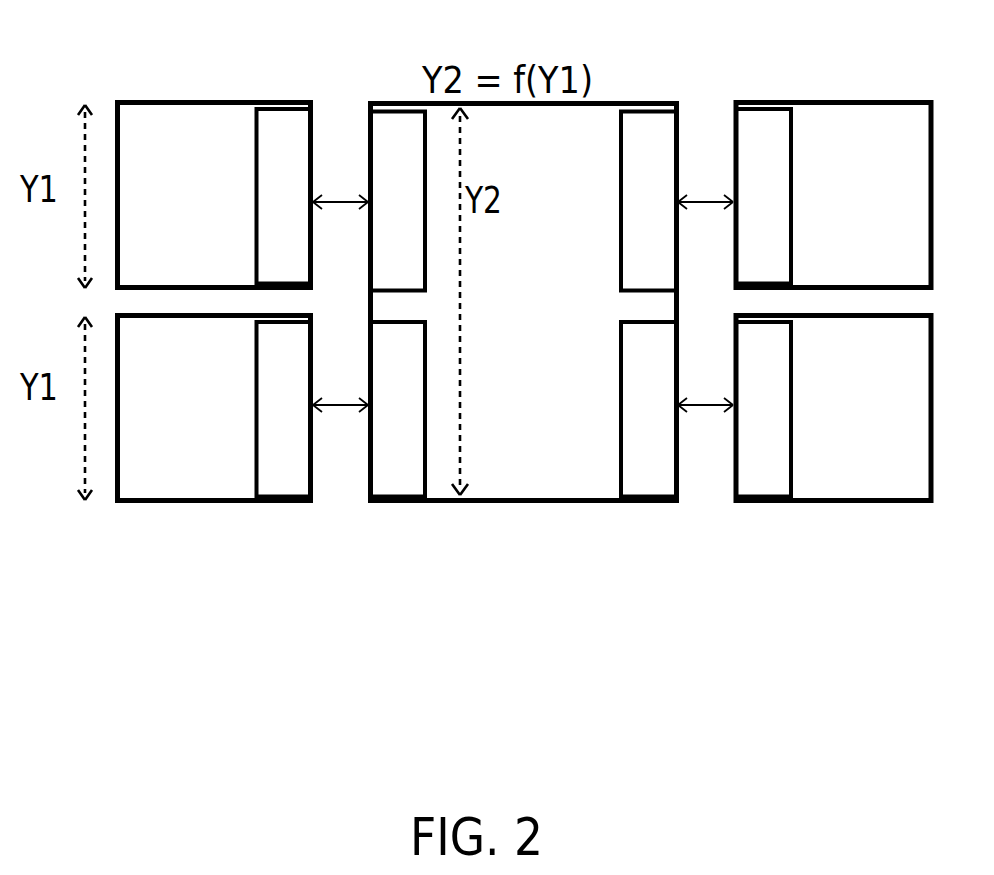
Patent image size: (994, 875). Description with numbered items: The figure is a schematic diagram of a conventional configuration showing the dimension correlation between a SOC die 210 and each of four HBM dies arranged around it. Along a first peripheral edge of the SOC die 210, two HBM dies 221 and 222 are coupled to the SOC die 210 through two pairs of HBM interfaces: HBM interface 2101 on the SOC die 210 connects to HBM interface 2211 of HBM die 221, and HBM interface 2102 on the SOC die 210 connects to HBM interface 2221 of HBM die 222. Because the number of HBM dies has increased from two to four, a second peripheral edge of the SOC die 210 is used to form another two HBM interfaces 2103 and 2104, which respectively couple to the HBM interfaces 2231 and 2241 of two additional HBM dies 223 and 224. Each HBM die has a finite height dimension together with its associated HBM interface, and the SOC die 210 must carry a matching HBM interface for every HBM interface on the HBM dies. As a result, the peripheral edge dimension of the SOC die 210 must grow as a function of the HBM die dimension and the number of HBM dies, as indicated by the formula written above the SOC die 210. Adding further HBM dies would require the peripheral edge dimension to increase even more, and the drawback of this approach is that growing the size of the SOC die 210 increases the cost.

The SOC die 210 is at (552, 503).
The HBM interface 2101 is at (393, 495).
The HBM interface 2102 is at (390, 113).
The HBM interface 2103 is at (662, 492).
The HBM interface 2104 is at (640, 118).
The HBM die 221 is at (190, 496).
The HBM interface 2211 is at (280, 491).
The HBM die 222 is at (175, 101).
The HBM interface 2221 is at (278, 112).
The HBM die 223 is at (880, 503).
The HBM interface 2231 is at (772, 490).
The HBM die 224 is at (855, 110).
The HBM interface 2241 is at (762, 118).